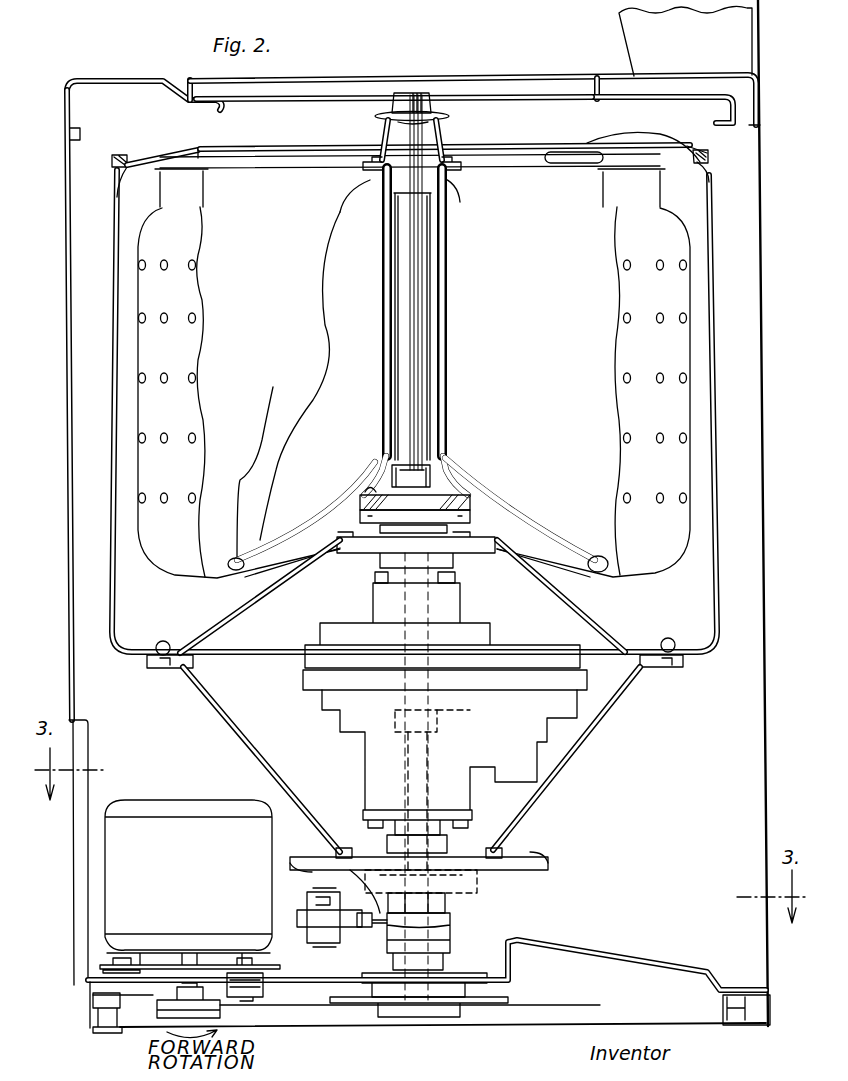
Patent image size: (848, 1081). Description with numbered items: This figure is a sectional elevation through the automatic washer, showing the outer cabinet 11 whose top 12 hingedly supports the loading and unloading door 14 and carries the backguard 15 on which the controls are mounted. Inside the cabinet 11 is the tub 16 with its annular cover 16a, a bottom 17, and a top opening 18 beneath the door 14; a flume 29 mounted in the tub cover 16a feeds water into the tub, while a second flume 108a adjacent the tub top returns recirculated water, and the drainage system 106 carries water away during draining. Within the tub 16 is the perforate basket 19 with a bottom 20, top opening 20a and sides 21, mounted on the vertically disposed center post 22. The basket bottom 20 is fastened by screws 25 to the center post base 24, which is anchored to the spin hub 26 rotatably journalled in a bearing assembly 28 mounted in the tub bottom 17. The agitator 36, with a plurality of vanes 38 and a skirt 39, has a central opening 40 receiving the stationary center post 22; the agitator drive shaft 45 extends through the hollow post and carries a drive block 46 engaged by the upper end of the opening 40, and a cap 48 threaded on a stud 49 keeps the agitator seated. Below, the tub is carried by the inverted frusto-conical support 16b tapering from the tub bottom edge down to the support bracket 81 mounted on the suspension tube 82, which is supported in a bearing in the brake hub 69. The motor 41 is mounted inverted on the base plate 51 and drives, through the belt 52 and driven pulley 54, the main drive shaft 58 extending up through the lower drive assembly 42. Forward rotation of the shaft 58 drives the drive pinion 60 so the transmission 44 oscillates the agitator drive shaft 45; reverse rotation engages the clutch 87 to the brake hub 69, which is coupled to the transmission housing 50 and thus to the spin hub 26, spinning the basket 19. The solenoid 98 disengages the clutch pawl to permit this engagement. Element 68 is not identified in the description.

The outer cabinet 11 is at (761, 197).
The top 12 is at (126, 70).
The loading and unloading door 14 is at (343, 77).
The backguard 15 is at (609, 33).
The drainage system 106 is at (676, 94).
The flume 108a is at (588, 99).
The tub 16 is at (712, 256).
The annular cover 16a is at (165, 160).
The support 16b is at (582, 743).
The top opening 18 is at (278, 141).
The top opening 20a is at (522, 152).
The flume 29 is at (576, 165).
The perforate basket 19 is at (209, 284).
The sides 21 is at (616, 406).
The cap 48 is at (422, 94).
The stud 49 is at (448, 118).
The drive block 46 is at (447, 189).
The center post 22 is at (435, 374).
The agitator drive shaft 45 is at (418, 270).
The central opening 40 is at (430, 316).
The agitator 36 is at (326, 329).
The vanes 38 is at (273, 395).
The screws 25 is at (364, 475).
The center post base 24 is at (472, 490).
The spin hub 26 is at (478, 515).
The skirt 39 is at (290, 526).
The bottom 20 is at (565, 575).
The bearing assembly 28 is at (366, 561).
The transmission housing 50 is at (462, 605).
The bottom 17 is at (255, 604).
The bolt 68 is at (170, 645).
The transmission 44 is at (338, 741).
The drive pinion 60 is at (393, 722).
The main drive shaft 58 is at (424, 778).
The motor 41 is at (194, 795).
The suspension tube 82 is at (458, 833).
The support bracket 81 is at (556, 858).
The solenoid 98 is at (323, 875).
The clutch 87 is at (380, 934).
The brake hub 69 is at (452, 907).
The lower drive assembly 42 is at (458, 935).
The base plate 51 is at (326, 977).
The belt 52 is at (273, 1007).
The driven pulley 54 is at (494, 1010).